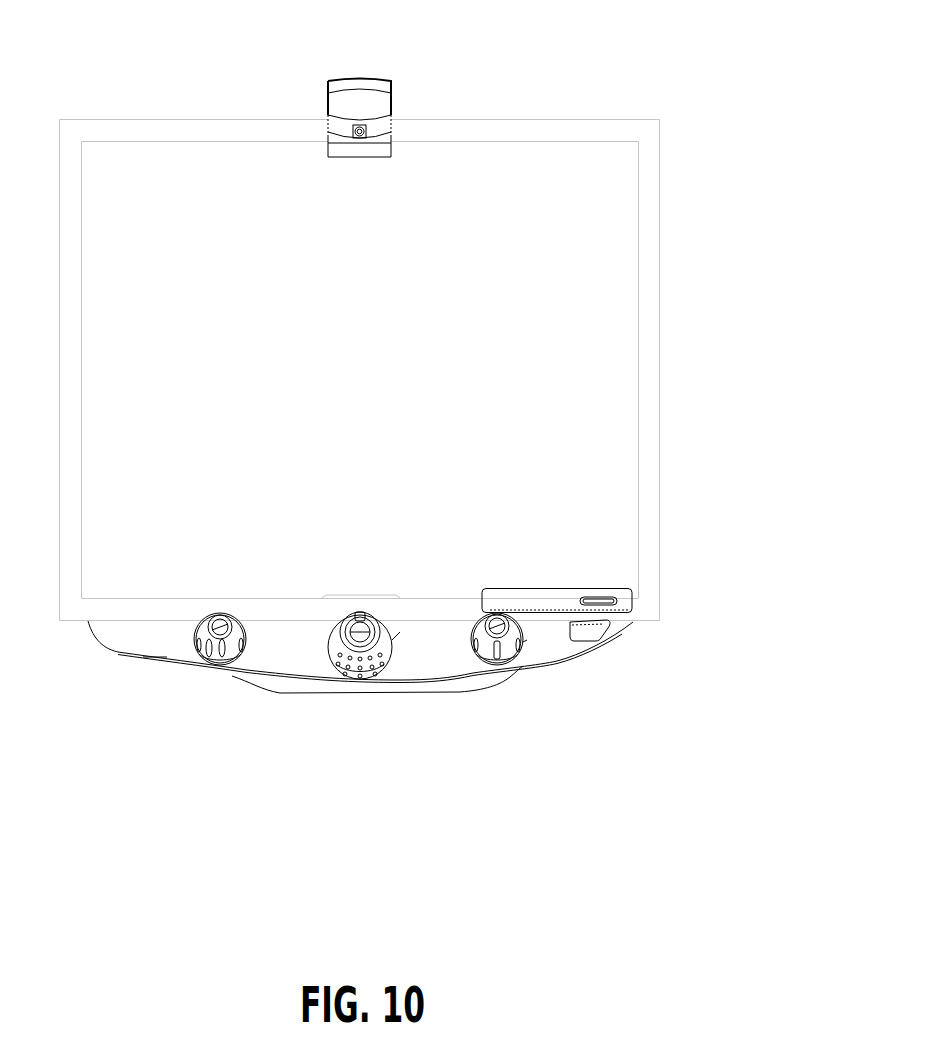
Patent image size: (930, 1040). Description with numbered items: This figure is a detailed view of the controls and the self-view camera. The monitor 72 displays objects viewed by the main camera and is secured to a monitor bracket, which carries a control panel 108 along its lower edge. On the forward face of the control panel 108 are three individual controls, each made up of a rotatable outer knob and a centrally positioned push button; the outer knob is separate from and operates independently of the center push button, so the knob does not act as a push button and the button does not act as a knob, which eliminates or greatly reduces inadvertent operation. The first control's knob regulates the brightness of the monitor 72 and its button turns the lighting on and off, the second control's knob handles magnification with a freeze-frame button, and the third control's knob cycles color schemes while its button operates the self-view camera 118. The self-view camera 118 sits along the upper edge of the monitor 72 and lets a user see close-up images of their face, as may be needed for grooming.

The monitor 72 is at (368, 386).
The control panel 108 is at (150, 660).
The self-view camera 118 is at (391, 97).